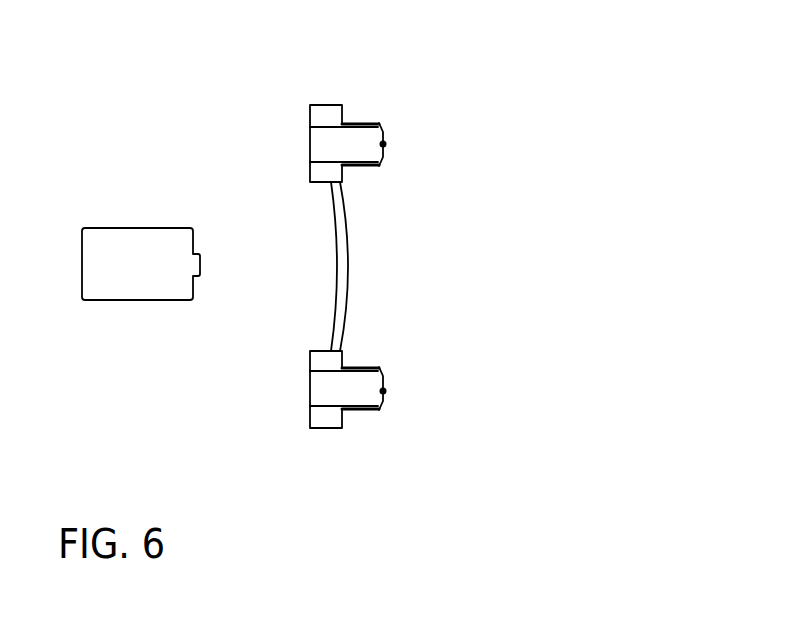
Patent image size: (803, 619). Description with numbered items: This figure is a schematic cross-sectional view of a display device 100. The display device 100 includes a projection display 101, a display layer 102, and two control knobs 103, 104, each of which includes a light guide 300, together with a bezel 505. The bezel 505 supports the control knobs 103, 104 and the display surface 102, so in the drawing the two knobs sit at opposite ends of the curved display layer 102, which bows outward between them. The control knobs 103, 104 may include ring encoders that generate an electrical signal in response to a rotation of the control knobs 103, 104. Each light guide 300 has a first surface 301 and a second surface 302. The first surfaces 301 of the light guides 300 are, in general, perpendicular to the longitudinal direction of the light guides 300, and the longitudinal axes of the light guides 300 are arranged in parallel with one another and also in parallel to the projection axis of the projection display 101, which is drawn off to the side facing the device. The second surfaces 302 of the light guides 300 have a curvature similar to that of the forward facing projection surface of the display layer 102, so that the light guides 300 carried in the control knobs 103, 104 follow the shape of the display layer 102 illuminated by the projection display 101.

The display device 100 is at (523, 181).
The projection display 101 is at (122, 232).
The display layer 102 is at (345, 288).
The control knob 103 is at (378, 431).
The control knob 104 is at (376, 104).
The light guide 300 is at (363, 167).
The first surface 301 is at (310, 144).
The second surface 302 is at (383, 144).
The bezel 505 is at (317, 86).